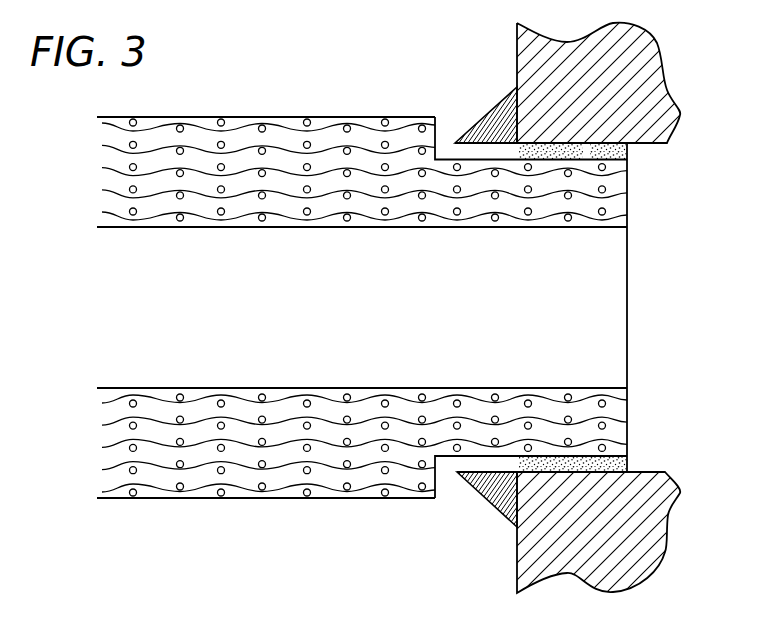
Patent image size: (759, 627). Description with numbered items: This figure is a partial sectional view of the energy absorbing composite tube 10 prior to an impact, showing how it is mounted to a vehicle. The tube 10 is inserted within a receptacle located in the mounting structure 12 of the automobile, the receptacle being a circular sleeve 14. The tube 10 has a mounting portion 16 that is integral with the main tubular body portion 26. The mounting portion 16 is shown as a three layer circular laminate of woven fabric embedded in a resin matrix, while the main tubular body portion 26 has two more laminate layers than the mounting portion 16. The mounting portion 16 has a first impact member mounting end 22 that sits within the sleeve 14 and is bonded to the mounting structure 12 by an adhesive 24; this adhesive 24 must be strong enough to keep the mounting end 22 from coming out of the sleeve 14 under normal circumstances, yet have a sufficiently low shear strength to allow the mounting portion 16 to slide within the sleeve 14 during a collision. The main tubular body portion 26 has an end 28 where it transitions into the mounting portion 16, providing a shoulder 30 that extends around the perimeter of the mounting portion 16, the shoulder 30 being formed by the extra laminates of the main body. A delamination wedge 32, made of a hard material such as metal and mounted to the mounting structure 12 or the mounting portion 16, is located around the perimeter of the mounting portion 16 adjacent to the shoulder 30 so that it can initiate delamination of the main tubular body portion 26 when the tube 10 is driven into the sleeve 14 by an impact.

The energy absorbing composite tube 10 is at (256, 99).
The mounting structure 12 is at (530, 66).
The circular sleeve 14 is at (585, 143).
The mounting portion 16 is at (627, 417).
The first impact member mounting end 22 is at (581, 228).
The adhesive 24 is at (614, 465).
The main tubular body portion 26 is at (276, 498).
The end of main tubular body portion 28 is at (436, 478).
The shoulder 30 is at (437, 130).
The delamination wedge 32 is at (486, 108).